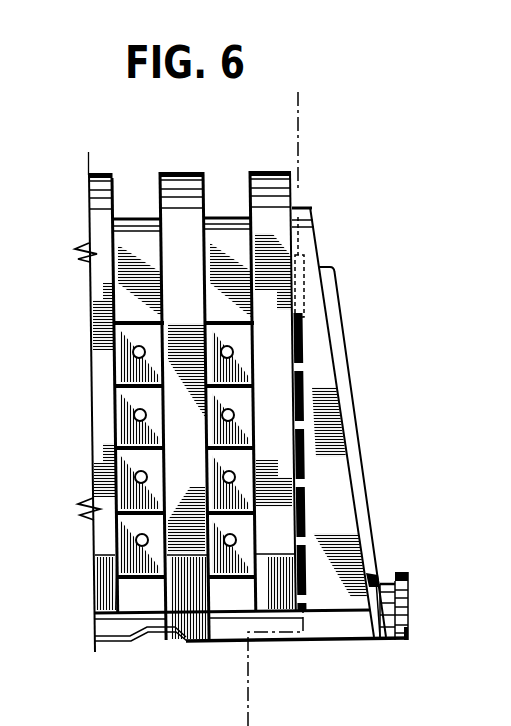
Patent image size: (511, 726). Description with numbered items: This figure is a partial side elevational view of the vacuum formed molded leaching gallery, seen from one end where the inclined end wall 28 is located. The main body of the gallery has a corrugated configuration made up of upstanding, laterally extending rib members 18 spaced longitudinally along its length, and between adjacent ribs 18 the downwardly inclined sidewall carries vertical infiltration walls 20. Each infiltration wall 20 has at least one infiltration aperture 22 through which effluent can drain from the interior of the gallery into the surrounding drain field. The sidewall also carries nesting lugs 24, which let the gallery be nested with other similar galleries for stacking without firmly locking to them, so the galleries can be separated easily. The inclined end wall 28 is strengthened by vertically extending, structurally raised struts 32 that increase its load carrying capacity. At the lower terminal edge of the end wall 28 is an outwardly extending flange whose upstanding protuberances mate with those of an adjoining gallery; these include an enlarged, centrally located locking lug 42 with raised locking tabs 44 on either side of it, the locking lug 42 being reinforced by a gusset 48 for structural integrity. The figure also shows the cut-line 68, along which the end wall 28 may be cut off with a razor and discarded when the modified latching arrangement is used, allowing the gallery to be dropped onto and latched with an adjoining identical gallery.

The rib member 18 is at (95, 174).
The infiltration wall 20 is at (122, 397).
The infiltration aperture 22 is at (233, 411).
The nesting lug 24 is at (188, 634).
The end wall 28 is at (303, 228).
The strut 32 is at (347, 393).
The locking lug 42 is at (409, 578).
The locking tab 44 is at (410, 626).
The gusset 48 is at (372, 568).
The cut-line 68 is at (309, 152).